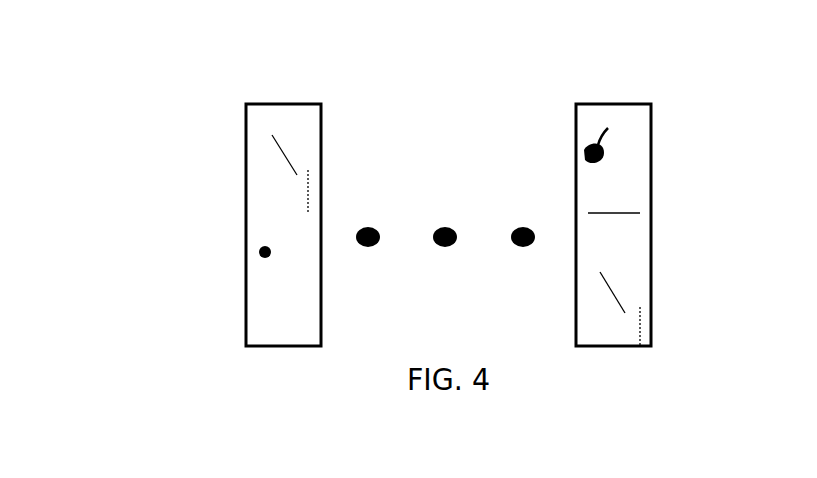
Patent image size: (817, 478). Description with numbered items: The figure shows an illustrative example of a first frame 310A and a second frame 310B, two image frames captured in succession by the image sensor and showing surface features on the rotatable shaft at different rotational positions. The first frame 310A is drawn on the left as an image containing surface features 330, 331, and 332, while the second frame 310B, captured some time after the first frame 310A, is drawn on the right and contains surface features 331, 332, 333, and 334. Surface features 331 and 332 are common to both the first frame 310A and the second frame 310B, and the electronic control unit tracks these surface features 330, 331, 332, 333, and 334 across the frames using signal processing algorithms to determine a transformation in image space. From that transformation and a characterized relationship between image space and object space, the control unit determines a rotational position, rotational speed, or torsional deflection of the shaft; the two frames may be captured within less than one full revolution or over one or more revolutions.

The first frame 310A is at (265, 102).
The second frame 310B is at (607, 102).
The surface feature 330 is at (227, 242).
The surface feature 331 is at (310, 141).
The surface feature 332 is at (338, 172).
The surface feature 333 is at (559, 141).
The surface feature 334 is at (559, 204).